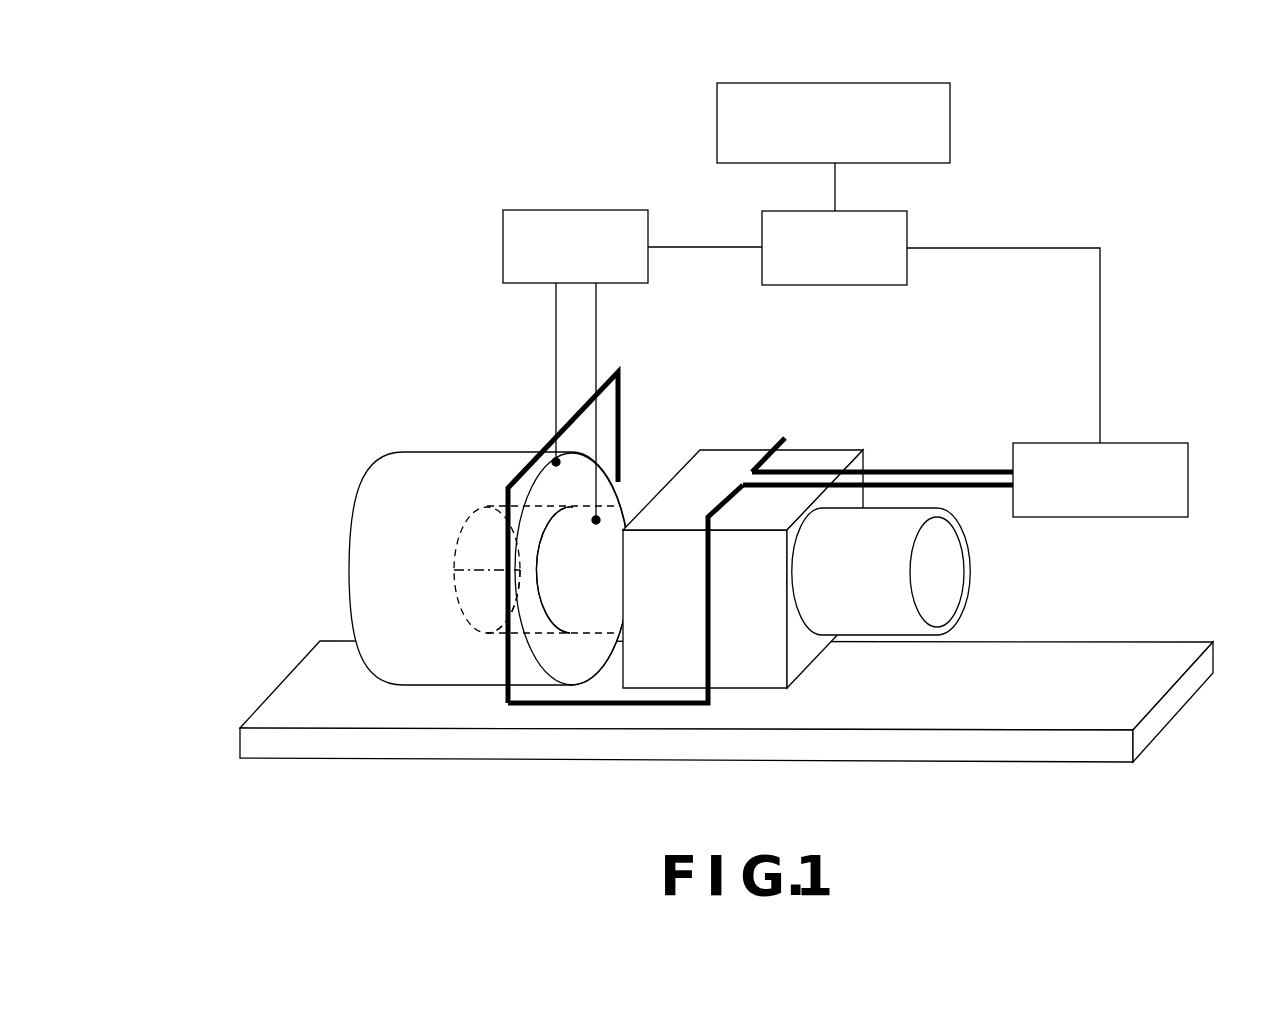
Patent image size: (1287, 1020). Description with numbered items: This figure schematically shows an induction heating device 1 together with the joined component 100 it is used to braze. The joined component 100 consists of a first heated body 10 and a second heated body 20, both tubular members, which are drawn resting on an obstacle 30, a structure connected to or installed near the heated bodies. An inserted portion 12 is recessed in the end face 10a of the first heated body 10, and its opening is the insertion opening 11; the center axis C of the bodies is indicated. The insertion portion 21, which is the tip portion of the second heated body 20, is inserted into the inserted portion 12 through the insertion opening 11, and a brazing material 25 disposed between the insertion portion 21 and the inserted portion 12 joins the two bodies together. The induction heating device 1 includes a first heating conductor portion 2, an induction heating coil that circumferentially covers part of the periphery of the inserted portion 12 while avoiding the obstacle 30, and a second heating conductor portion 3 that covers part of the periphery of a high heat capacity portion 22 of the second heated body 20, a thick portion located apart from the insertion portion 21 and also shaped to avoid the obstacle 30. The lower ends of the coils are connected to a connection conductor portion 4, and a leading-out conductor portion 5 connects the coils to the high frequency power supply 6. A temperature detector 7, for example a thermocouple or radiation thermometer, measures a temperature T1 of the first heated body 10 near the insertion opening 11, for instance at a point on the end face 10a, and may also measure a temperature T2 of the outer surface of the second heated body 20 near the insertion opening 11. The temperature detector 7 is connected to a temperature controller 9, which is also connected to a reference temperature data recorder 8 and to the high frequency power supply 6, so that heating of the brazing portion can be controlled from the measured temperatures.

The induction heating device 1 is at (1058, 95).
The joined component 100 is at (322, 455).
The first heating conductor portion 2 is at (570, 415).
The second heating conductor portion 3 is at (712, 572).
The connection conductor portion 4 is at (610, 708).
The leading-out conductor portion 5 is at (910, 468).
The high frequency power supply 6 is at (1135, 443).
The temperature detector 7 is at (580, 208).
The reference temperature data recorder 8 is at (950, 122).
The temperature controller 9 is at (815, 287).
The first heated body 10 is at (469, 568).
The end face 10a is at (580, 660).
The insertion opening 11 is at (545, 555).
The brazing material 25 is at (554, 570).
The inserted portion 12 is at (455, 567).
The second heated body 20 is at (975, 577).
The insertion portion 21 is at (487, 603).
The high heat capacity portion 22 is at (725, 448).
The obstacle 30 is at (840, 743).
The central axis C is at (503, 543).
The temperature of the first heated body T1 is at (539, 374).
The temperature of the second heated body T2 is at (613, 403).